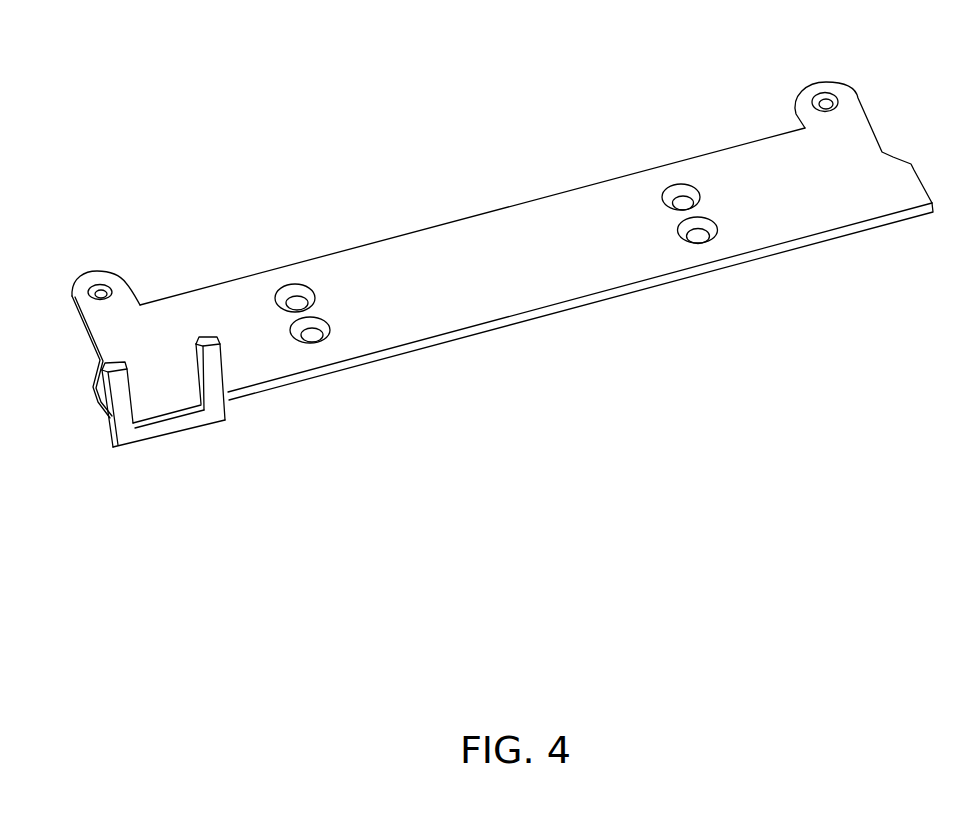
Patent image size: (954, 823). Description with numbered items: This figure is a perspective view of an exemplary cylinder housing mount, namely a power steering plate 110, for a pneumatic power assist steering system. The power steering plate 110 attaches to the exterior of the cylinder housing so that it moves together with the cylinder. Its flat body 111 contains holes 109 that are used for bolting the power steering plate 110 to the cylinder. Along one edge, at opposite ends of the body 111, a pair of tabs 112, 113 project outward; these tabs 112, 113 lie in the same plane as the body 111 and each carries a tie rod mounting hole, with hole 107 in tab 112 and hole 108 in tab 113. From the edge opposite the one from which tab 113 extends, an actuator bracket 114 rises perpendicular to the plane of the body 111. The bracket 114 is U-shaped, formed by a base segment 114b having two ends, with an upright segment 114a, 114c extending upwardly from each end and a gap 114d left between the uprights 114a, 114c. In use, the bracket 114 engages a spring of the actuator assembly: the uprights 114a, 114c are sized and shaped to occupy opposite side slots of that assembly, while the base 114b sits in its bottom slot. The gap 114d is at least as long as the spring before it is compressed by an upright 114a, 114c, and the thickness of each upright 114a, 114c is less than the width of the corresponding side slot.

The tie rod mounting hole 107 is at (823, 100).
The tie rod mounting hole 108 is at (101, 290).
The holes 109 is at (295, 298).
The power steering plate 110 is at (515, 322).
The body 111 is at (510, 258).
The tab 112 is at (803, 97).
The tab 113 is at (120, 287).
The actuator bracket 114 is at (149, 373).
The upright segment 114a is at (100, 413).
The base segment 114b is at (187, 423).
The upright segment 114c is at (217, 378).
The gap 114d is at (167, 388).